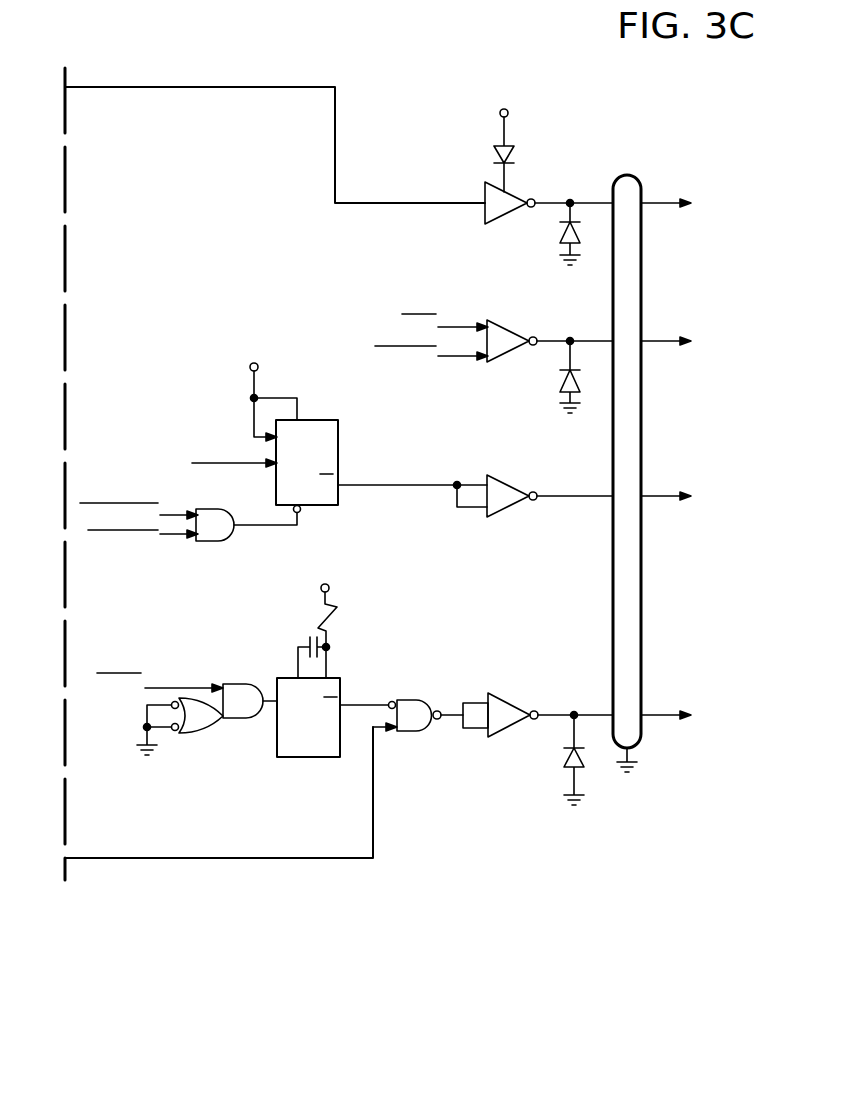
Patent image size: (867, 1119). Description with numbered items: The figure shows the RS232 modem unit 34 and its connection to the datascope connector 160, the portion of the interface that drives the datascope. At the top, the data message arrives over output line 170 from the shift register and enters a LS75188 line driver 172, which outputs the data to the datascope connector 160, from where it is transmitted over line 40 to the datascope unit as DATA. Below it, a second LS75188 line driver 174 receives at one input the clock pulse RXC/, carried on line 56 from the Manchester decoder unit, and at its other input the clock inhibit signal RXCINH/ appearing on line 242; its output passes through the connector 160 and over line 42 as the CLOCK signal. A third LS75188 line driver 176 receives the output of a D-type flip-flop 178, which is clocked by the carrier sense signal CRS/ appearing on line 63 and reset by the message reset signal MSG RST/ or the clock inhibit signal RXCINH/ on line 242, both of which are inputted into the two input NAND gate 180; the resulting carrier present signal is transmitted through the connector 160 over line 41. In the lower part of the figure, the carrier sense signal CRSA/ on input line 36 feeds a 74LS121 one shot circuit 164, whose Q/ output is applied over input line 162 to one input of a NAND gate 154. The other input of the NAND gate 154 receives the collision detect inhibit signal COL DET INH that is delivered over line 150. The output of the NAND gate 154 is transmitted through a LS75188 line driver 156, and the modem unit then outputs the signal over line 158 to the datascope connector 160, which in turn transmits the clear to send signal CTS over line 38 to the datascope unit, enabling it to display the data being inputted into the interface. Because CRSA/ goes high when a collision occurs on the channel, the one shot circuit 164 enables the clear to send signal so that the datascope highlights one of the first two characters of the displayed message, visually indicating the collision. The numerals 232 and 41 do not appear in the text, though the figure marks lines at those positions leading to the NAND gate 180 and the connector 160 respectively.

The output line 170 is at (207, 88).
The RS232 modem unit 34 is at (240, 210).
The LS75188 line driver 172 is at (507, 193).
The line 40 is at (648, 200).
The line 56 is at (449, 323).
The LS75188 line driver 174 is at (503, 331).
The line 242 is at (460, 357).
The line 42 is at (653, 340).
The D-type flip-flop 178 is at (339, 446).
The line 63 is at (220, 464).
The MSG RST message reset line 232 is at (170, 512).
The two input NAND gate 180 is at (228, 538).
The LS75188 line driver 176 is at (508, 486).
The CARRIER PRESENT output line 41 is at (652, 496).
The input line 36 is at (170, 688).
The 74LS121 one shot circuit 164 is at (338, 677).
The input line 162 is at (355, 685).
The NAND gate 154 is at (413, 700).
The LS75188 line driver 156 is at (505, 694).
The line 158 is at (552, 713).
The datascope connector 160 is at (640, 689).
The line 38 is at (662, 717).
The line 150 is at (205, 860).